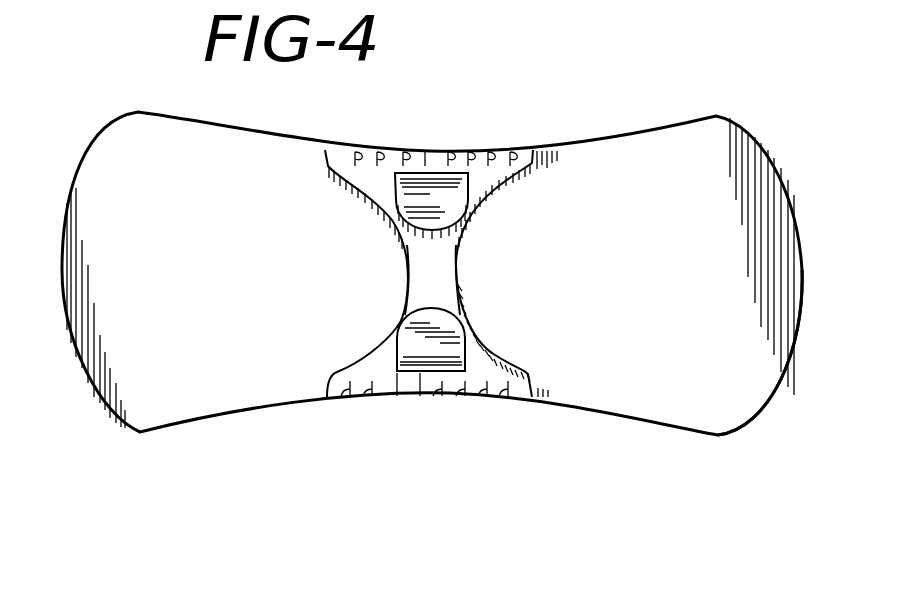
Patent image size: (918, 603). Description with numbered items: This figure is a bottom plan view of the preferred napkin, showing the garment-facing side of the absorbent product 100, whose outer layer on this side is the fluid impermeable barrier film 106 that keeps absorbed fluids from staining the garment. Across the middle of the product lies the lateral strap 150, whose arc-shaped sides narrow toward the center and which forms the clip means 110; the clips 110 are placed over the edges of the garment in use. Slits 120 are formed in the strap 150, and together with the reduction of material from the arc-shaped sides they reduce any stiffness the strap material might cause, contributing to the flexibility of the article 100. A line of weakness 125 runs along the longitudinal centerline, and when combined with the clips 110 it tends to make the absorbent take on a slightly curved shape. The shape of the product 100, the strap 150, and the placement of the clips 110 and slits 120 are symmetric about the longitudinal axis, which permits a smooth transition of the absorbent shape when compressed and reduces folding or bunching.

The absorbent product 100 is at (738, 114).
The fluid impermeable barrier film 106 is at (707, 410).
The clips 110 is at (430, 198).
The slits 120 is at (407, 152).
The line of weakness 125 is at (416, 270).
The lateral strap 150 is at (392, 356).